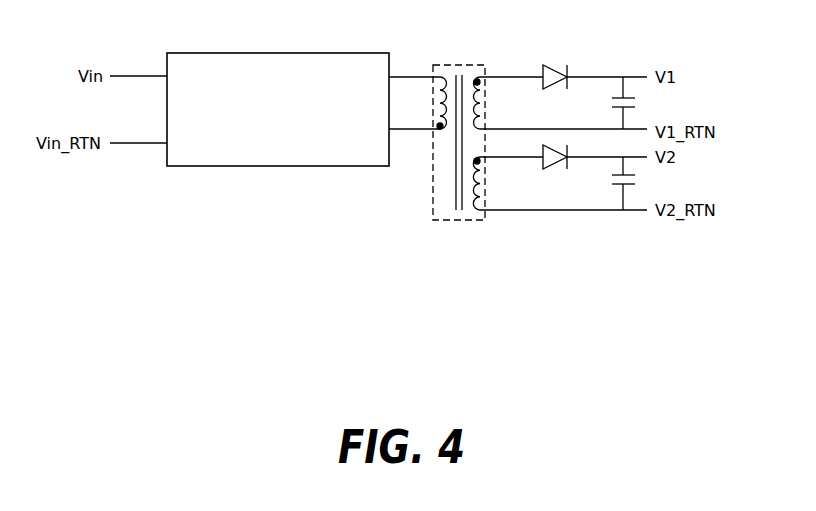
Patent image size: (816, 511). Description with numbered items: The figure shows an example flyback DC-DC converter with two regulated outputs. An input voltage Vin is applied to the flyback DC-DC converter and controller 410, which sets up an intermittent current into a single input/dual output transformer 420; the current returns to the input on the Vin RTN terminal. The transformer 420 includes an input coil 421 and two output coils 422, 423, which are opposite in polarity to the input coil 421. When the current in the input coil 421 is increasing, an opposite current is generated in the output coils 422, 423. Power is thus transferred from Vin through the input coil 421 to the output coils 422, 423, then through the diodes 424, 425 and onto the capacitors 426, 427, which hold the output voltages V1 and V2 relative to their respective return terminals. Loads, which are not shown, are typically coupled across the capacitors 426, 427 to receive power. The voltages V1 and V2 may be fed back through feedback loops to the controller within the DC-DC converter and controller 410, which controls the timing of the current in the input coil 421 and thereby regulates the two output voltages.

The flyback DC-DC converter and controller 410 is at (203, 53).
The single input/dual output transformer 420 is at (463, 129).
The input coil 421 is at (422, 103).
The output coil 422 is at (502, 103).
The output coil 423 is at (501, 183).
The diode 424 is at (551, 62).
The diode 425 is at (562, 169).
The capacitor 426 is at (646, 103).
The capacitor 427 is at (646, 183).